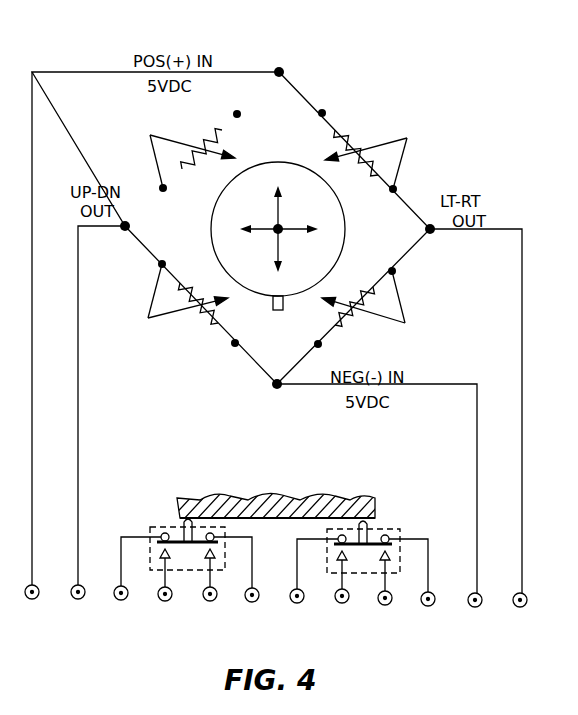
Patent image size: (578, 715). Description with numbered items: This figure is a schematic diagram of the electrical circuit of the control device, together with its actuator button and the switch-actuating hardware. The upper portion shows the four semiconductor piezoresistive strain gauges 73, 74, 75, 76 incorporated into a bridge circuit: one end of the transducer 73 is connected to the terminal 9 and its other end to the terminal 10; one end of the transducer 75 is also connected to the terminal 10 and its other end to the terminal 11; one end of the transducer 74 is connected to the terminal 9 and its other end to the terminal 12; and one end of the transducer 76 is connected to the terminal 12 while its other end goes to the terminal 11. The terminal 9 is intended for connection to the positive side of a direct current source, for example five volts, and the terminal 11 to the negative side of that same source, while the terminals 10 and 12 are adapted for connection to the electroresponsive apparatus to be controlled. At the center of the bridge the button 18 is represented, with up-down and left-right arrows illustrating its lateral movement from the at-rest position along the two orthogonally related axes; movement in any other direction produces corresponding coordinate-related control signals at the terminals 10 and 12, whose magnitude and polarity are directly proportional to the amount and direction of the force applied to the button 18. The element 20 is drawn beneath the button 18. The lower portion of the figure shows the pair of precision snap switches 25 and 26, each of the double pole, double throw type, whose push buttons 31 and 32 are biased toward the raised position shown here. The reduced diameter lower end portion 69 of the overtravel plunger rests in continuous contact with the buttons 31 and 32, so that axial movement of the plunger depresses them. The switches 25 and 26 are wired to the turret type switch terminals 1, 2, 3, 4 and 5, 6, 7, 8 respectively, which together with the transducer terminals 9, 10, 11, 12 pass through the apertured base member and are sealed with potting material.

The button 18 is at (345, 204).
The joystick stem 20 is at (279, 311).
The precision snap switch 25 is at (150, 528).
The precision snap switch 26 is at (400, 531).
The push button 31 is at (184, 520).
The push button 32 is at (368, 521).
The reduced diameter lower end portion 69 is at (276, 494).
The strain gauge 73 is at (210, 131).
The strain gauge 74 is at (340, 134).
The strain gauge 75 is at (212, 320).
The strain gauge 76 is at (344, 325).
The switch terminal 1 is at (165, 608).
The switch terminal 2 is at (121, 607).
The switch terminal 3 is at (252, 609).
The switch terminal 4 is at (210, 608).
The switch terminal 5 is at (342, 610).
The switch terminal 6 is at (297, 610).
The switch terminal 7 is at (428, 613).
The switch terminal 8 is at (385, 612).
The transducer terminal 9 is at (32, 606).
The transducer terminal 10 is at (79, 606).
The transducer terminal 11 is at (477, 614).
The transducer terminal 12 is at (522, 614).